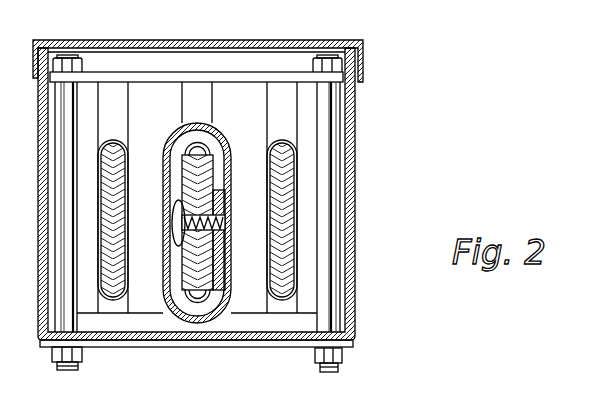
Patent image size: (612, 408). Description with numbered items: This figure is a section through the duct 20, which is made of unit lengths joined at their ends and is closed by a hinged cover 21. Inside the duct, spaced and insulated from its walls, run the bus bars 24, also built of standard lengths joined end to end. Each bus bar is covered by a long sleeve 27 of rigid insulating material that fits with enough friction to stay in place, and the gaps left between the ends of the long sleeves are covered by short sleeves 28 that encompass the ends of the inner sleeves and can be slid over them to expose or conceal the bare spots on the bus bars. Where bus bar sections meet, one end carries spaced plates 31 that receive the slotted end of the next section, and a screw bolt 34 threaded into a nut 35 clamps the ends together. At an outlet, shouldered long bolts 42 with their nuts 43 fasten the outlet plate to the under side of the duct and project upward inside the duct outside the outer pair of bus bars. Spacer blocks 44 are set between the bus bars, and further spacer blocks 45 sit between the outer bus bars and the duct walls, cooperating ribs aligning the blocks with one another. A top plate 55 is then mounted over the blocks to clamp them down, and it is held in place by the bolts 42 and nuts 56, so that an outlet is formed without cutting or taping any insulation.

The duct 20 is at (351, 211).
The hinged cover 21 is at (328, 46).
The bus bars 24 is at (198, 283).
The long sleeves 27 is at (121, 148).
The short sleeves 28 is at (221, 139).
The plates 31 is at (213, 176).
The screw bolt 34 is at (175, 228).
The nut 35 is at (232, 233).
The long bolts 42 is at (332, 115).
The nuts 43 is at (317, 357).
The spacer blocks 44 is at (223, 104).
The spacer blocks 45 is at (87, 305).
The top plate 55 is at (231, 72).
The nuts 56 is at (82, 67).